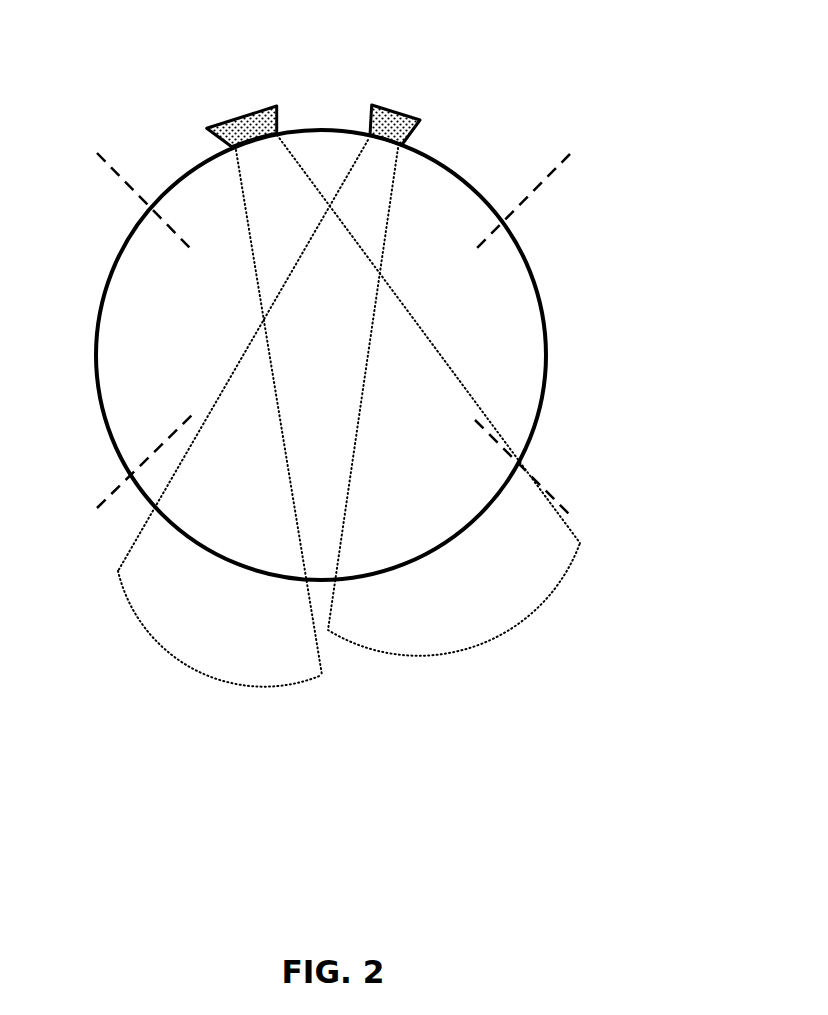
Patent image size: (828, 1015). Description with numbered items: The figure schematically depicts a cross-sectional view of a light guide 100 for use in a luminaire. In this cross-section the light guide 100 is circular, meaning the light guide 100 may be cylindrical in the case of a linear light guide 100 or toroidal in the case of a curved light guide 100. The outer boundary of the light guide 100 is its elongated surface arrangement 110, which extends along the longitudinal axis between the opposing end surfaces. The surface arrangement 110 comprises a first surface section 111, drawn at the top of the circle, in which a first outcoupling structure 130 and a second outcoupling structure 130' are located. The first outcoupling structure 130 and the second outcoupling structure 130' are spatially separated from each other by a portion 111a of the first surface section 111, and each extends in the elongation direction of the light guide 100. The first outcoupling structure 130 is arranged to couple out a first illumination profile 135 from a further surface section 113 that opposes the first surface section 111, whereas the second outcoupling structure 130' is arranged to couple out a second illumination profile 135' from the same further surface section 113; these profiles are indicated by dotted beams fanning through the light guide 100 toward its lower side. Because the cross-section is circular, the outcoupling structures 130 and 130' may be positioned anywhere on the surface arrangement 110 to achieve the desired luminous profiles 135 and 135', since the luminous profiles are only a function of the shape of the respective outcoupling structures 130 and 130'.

The light guide 100 is at (363, 927).
The elongated surface arrangement 110 is at (547, 338).
The first surface section 111 is at (457, 177).
The portion of the first surface section 111a is at (323, 130).
The further surface section 113 is at (140, 492).
The first outcoupling structure 130 is at (242, 76).
The second outcoupling structure 130' is at (395, 75).
The first illumination profile 135 is at (428, 444).
The second illumination profile 135' is at (243, 457).